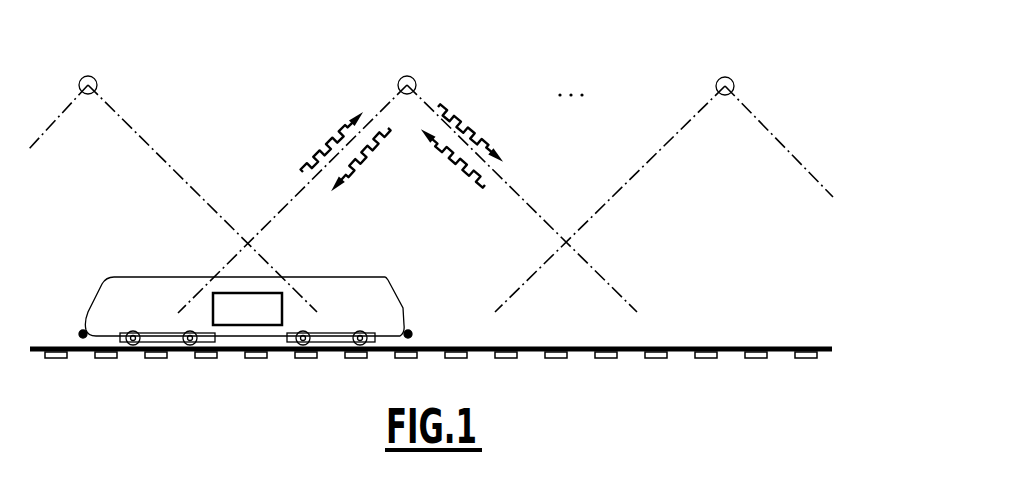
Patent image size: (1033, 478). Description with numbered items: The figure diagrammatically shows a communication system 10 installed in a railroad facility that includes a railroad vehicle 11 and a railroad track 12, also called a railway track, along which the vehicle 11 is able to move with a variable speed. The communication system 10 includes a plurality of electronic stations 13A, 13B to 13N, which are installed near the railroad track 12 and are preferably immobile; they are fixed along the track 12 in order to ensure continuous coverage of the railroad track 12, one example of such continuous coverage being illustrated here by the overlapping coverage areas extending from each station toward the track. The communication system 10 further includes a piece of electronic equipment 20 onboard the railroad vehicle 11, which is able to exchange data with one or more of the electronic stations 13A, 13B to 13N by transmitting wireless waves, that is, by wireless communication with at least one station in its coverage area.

The communication system 10 is at (626, 22).
The railroad vehicle 11 is at (101, 300).
The railroad track 12 is at (73, 358).
The electronic station 13A is at (88, 75).
The electronic station 13B is at (407, 75).
The electronic station 13N is at (725, 76).
The piece of electronic equipment 20 is at (233, 318).